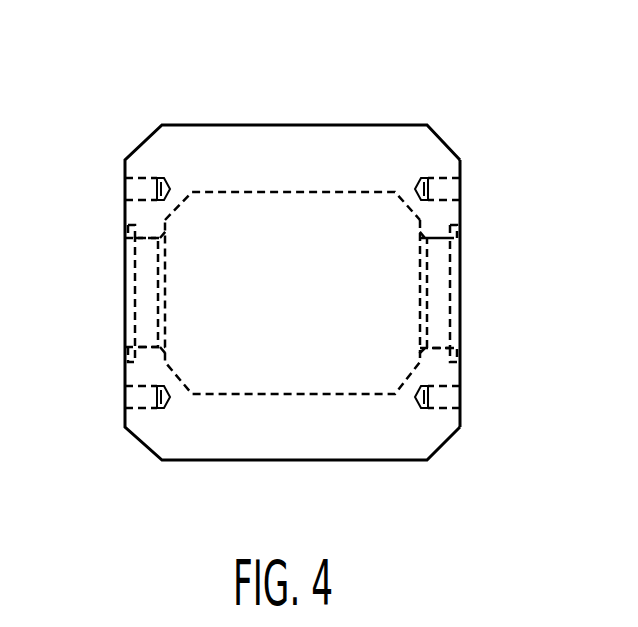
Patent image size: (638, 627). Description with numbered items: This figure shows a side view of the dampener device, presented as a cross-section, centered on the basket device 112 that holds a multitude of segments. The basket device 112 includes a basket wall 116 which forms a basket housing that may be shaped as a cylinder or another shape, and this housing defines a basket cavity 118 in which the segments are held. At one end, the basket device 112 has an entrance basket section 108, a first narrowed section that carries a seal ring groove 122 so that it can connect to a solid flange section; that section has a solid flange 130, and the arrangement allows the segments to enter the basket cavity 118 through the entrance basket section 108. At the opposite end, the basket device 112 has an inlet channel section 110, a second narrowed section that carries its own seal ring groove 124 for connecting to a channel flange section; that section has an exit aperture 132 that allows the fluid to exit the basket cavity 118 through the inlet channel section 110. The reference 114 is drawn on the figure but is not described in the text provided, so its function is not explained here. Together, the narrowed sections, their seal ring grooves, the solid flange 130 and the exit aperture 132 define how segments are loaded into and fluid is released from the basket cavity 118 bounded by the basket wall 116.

The entrance basket section 108 is at (435, 263).
The inlet channel section 110 is at (145, 258).
The basket device 112 is at (357, 192).
The upper base plate surface 114 is at (225, 225).
The basket wall 116 is at (283, 192).
The basket cavity 118 is at (213, 358).
The seal ring groove 122 is at (455, 332).
The seal ring groove 124 is at (131, 337).
The solid flange 130 is at (460, 287).
The exit aperture 132 is at (131, 292).